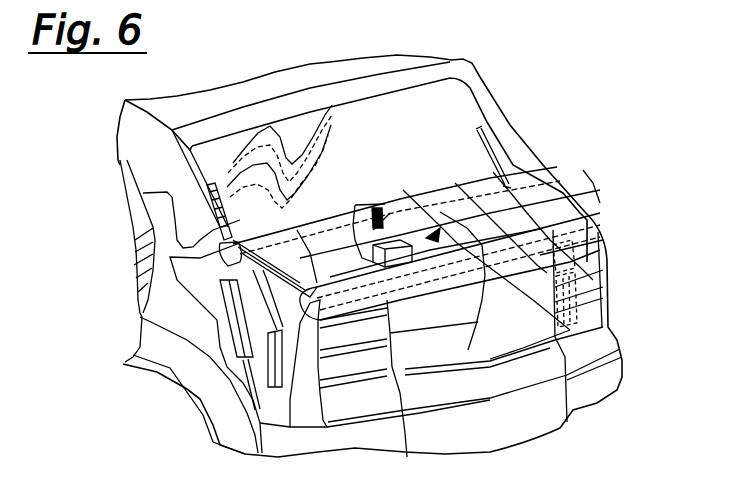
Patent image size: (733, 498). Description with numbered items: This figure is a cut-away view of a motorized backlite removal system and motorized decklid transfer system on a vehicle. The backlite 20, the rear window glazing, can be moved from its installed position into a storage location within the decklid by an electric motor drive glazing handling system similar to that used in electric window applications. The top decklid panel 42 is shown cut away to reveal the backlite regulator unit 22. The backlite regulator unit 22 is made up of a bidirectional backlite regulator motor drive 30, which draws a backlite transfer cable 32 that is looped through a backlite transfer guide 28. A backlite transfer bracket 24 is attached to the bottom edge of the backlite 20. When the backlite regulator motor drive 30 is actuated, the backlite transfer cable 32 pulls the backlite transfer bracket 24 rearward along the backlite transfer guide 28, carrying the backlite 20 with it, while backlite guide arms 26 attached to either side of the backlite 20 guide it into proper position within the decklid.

The backlite 20 is at (447, 105).
The backlite regulator unit 22 is at (500, 201).
The backlite transfer bracket 24 is at (350, 217).
The backlite guide arms 26 is at (487, 147).
The backlite transfer guide 28 is at (587, 263).
The backlite regulator motor drive 30 is at (530, 292).
The backlite transfer cable 32 is at (380, 217).
The top decklid panel 42 is at (275, 258).